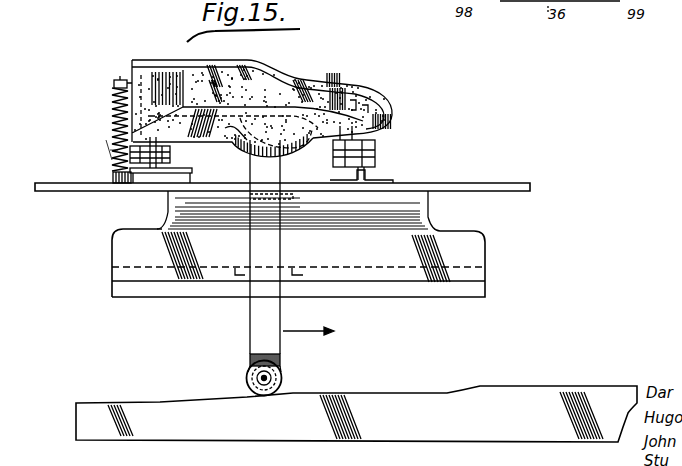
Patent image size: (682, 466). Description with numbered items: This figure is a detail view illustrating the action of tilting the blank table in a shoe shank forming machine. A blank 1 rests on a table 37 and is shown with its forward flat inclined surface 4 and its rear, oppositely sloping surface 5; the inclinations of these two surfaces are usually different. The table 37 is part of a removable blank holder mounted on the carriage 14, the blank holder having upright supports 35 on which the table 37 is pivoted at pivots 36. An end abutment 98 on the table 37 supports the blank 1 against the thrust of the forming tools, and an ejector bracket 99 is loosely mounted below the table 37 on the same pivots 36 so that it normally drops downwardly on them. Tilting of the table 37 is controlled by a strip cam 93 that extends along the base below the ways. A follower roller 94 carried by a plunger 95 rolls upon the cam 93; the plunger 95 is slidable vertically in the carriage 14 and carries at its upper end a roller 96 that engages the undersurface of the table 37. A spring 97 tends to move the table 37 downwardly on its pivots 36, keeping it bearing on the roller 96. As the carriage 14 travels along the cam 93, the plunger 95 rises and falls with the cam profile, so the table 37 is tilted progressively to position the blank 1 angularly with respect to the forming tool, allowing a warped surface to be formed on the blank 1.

The blank 1 is at (251, 61).
The flat inclined surface 4 is at (153, 86).
The oppositely sloping surface 5 is at (366, 100).
The carriage 14 is at (418, 218).
The upright supports 35 is at (170, 186).
The pivots 36 is at (171, 156).
The table 37 is at (236, 141).
The strip cam 93 is at (358, 404).
The follower roller 94 is at (283, 378).
The plunger 95 is at (259, 312).
The roller 96 is at (301, 90).
The spring 97 is at (118, 150).
The end abutment 98 is at (131, 82).
The ejector bracket 99 is at (292, 150).